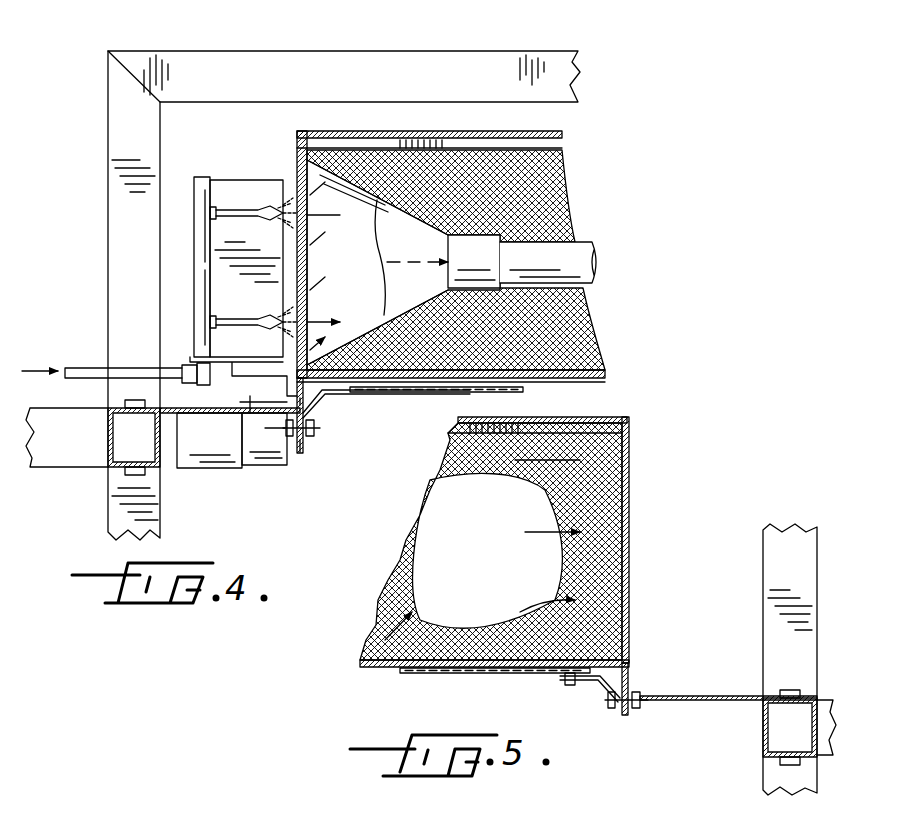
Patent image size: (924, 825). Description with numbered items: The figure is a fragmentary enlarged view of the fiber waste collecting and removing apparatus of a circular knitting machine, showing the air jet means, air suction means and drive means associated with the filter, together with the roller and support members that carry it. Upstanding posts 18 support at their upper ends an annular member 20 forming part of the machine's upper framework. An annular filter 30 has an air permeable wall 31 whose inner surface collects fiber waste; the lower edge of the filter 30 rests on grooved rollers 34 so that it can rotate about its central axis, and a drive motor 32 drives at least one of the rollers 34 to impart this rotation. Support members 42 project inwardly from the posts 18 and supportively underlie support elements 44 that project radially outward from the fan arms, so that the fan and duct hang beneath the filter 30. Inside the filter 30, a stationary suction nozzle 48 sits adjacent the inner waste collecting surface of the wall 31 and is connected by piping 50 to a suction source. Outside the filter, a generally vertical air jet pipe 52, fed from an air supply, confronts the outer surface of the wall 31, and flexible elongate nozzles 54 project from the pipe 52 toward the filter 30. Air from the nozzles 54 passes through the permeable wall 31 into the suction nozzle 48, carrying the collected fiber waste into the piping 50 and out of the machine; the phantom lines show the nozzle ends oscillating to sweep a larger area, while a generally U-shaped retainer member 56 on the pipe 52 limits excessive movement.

In FIG. 4, the posts 18 is at (110, 495).
In FIG. 5, the posts 18 is at (775, 642).
In FIG. 4, the annular member 20 is at (345, 25).
In FIG. 4, the annular filter 30 is at (610, 172).
In FIG. 5, the annular filter 30 is at (400, 605).
In FIG. 4, the air permeable wall 31 is at (297, 170).
In FIG. 5, the air permeable wall 31 is at (630, 492).
In FIG. 4, the drive motor 32 is at (265, 468).
In FIG. 4, the grooved rollers 34 is at (310, 440).
In FIG. 5, the grooved rollers 34 is at (628, 718).
In FIG. 4, the support members 42 is at (348, 392).
In FIG. 5, the support members 42 is at (562, 682).
In FIG. 4, the support elements 44 is at (422, 393).
In FIG. 5, the support elements 44 is at (470, 673).
In FIG. 4, the suction nozzle 48 is at (405, 225).
In FIG. 4, the piping 50 is at (580, 250).
In FIG. 4, the air jet pipe 52 is at (197, 205).
In FIG. 4, the elongate nozzles 54 is at (262, 208).
In FIG. 4, the retainer member 56 is at (210, 246).